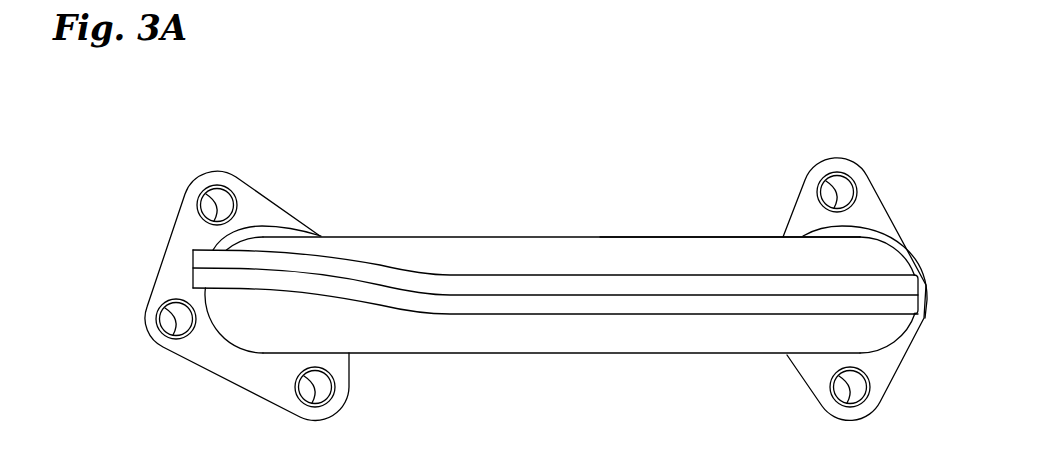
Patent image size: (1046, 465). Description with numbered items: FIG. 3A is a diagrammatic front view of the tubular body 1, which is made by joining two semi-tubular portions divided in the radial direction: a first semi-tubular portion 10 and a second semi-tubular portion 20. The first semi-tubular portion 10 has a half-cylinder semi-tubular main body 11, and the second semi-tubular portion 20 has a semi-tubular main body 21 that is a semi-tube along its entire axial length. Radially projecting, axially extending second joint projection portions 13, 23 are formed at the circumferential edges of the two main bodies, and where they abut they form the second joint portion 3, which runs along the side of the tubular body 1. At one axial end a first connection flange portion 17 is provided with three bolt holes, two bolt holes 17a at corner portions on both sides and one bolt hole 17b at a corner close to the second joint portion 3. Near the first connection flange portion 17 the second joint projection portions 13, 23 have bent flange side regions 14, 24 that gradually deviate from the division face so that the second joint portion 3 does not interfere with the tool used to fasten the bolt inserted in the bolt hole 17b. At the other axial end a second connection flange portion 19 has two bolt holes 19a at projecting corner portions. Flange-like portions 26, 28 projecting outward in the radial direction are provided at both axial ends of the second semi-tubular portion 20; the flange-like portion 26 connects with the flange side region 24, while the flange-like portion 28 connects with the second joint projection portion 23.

The tubular body 1 is at (303, 78).
The second joint portion 3 is at (587, 178).
The first semi-tubular portion 10 is at (518, 357).
The semi-tubular main body 11 is at (607, 342).
The second joint projection portion 13 is at (533, 303).
The flange side region 14 is at (197, 283).
The first connection flange portion 17 is at (237, 358).
The bolt hole 17a is at (220, 202).
The bolt hole 17b is at (173, 330).
The second connection flange portion 19 is at (813, 367).
The bolt hole 19a is at (845, 185).
The second semi-tubular portion 20 is at (421, 223).
The semi-tubular main body 21 is at (660, 255).
The second joint projection portion 23 is at (582, 287).
The flange side region 24 is at (198, 263).
The flange-like portion 26 is at (264, 230).
The flange-like portion 28 is at (897, 253).